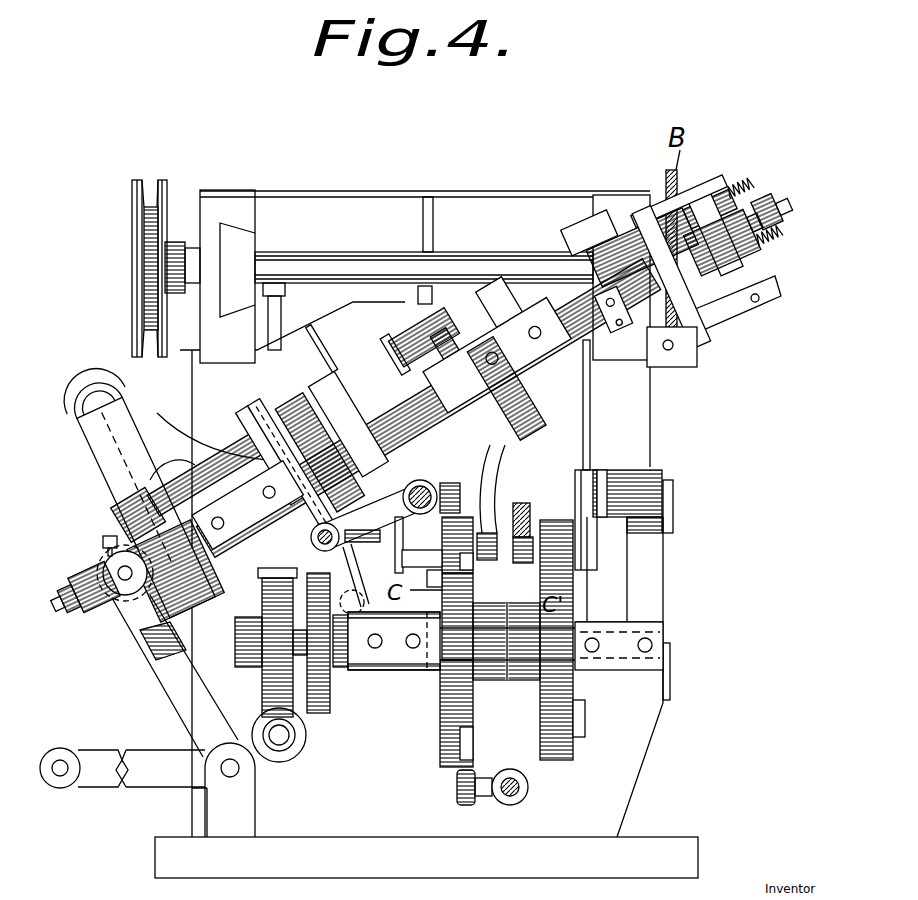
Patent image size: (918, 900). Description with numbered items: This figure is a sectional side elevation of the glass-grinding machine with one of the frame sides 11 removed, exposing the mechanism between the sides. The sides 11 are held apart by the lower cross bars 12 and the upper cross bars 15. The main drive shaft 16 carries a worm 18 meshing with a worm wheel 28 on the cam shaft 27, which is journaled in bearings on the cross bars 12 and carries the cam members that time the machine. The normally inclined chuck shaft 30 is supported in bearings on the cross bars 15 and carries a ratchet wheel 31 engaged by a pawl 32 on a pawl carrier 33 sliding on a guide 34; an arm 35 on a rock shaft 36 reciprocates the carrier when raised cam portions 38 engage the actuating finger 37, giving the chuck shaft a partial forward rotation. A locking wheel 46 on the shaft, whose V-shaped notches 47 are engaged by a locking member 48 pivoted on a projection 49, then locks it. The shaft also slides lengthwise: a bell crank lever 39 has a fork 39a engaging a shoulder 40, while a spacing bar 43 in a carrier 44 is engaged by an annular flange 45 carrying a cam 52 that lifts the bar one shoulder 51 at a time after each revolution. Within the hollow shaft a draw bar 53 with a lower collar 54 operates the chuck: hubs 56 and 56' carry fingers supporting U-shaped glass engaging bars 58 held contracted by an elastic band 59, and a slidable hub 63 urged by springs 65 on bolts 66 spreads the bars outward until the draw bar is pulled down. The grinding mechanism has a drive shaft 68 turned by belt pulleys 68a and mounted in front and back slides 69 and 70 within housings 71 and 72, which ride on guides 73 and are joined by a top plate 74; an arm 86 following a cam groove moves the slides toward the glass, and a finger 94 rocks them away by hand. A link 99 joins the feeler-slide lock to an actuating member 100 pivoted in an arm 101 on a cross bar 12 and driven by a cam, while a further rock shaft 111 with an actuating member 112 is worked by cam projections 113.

The sides of the frame 11 is at (618, 750).
The lower cross bars 12 is at (395, 655).
The upper cross bars 15 is at (380, 424).
The main drive shaft 16 is at (258, 798).
The worm 18 is at (307, 731).
The cam shaft 27 is at (238, 642).
The worm wheel 28 is at (275, 658).
The chuck shaft 30 is at (397, 412).
The ratchet wheel 31 is at (290, 390).
The pawl 32 is at (335, 441).
The pawl carrier 33 is at (280, 438).
The guide 34 is at (255, 413).
The arm 35 is at (368, 549).
The rock shaft 36 is at (421, 482).
The actuating finger 37 is at (452, 482).
The raised peripheral cam portions 38 is at (455, 617).
The bell crank lever 39 is at (158, 748).
The fork 39a is at (138, 613).
The shoulder 40 is at (127, 547).
The spacing bar 43 is at (135, 405).
The carrier 44 is at (123, 462).
The annular flange 45 is at (120, 503).
The locking wheel 46 is at (488, 428).
The V-shaped notches 47 is at (440, 350).
The locking member 48 is at (422, 305).
The projection 49 is at (478, 307).
The shoulders 51 is at (187, 461).
The cam 52 is at (207, 592).
The draw bar 53 is at (68, 613).
The collar 54 is at (78, 572).
The hub 56 is at (727, 240).
The hub 56' is at (665, 246).
The glass engaging bars 58 is at (700, 190).
The elastic band 59 is at (707, 340).
The slidable hub 63 is at (712, 272).
The springs 65 is at (742, 182).
The bolts 66 is at (770, 198).
The drive shaft 68 is at (334, 253).
The belt pulleys 68a is at (142, 213).
The front slide 69 is at (593, 233).
The back slide 70 is at (247, 262).
The housing 71 is at (605, 195).
The housing 72 is at (221, 195).
The guides 73 is at (192, 358).
The top plate 74 is at (514, 185).
The arm 86 is at (497, 483).
The finger 94 is at (436, 232).
The link 99 is at (591, 400).
The actuating member 100 is at (600, 478).
The arm 101 is at (638, 490).
The rock shaft 111 is at (528, 789).
The actuating member 112 is at (477, 806).
The cam projections 113 is at (473, 744).